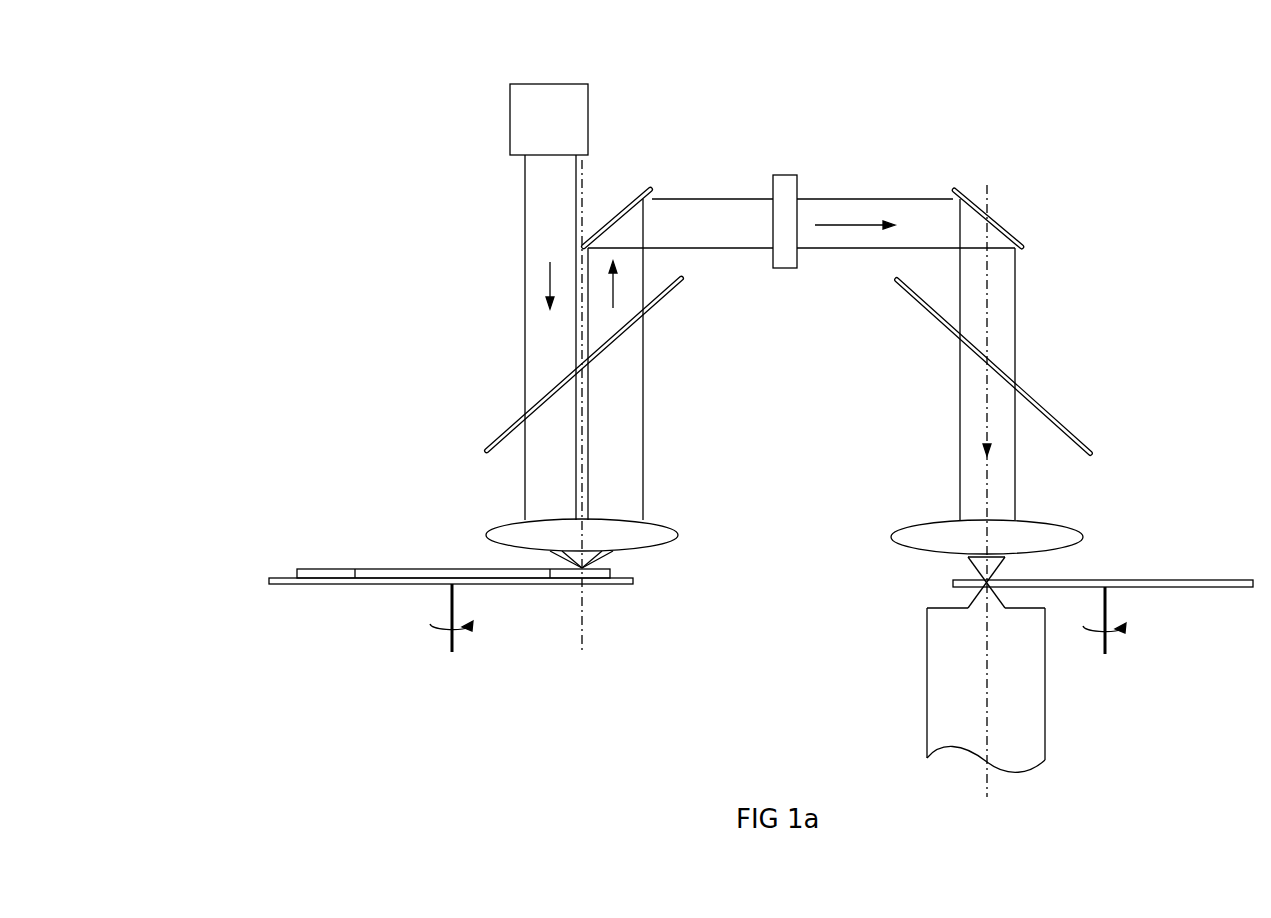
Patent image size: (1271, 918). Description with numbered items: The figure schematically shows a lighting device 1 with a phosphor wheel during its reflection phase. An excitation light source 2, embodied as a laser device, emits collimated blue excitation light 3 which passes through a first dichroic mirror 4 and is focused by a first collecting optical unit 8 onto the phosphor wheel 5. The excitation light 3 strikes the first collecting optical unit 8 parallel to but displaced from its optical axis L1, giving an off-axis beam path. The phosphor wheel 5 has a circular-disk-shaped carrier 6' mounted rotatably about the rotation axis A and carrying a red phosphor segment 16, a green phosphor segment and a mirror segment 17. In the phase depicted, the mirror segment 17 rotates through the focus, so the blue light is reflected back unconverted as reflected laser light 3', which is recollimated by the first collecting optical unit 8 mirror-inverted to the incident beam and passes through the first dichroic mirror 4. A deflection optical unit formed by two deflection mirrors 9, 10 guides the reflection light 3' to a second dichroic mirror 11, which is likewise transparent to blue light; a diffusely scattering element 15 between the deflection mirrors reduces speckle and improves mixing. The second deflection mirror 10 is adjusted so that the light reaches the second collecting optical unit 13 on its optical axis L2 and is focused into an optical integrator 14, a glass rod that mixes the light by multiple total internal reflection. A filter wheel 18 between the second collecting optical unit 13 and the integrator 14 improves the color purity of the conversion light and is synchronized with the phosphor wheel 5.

The lighting device 1 is at (1068, 62).
The excitation light source 2 is at (522, 115).
The excitation light 3 is at (512, 337).
The reflected laser light 3' is at (801, 324).
The first dichroic mirror 4 is at (508, 431).
The phosphor wheel 5 is at (254, 580).
The platen 6' is at (451, 624).
The first collecting optical unit 8 is at (678, 535).
The first deflection mirror 9 is at (619, 212).
The second deflection mirror 10 is at (1000, 226).
The second dichroic mirror 11 is at (1066, 428).
The second collecting optical unit 13 is at (1083, 537).
The optical integrator 14 is at (1025, 717).
The diffusely scattering element 15 is at (784, 190).
The red phosphor segment 16 is at (327, 569).
The mirror segment 17 is at (610, 573).
The filter wheel 18 is at (1210, 578).
The rotation axis A is at (449, 647).
The optical axis L1 is at (582, 637).
The optical axis L2 is at (989, 185).